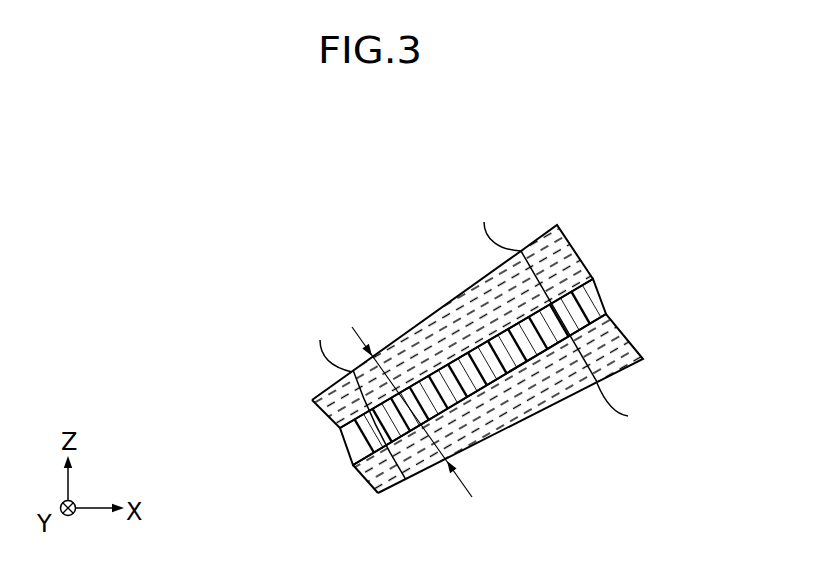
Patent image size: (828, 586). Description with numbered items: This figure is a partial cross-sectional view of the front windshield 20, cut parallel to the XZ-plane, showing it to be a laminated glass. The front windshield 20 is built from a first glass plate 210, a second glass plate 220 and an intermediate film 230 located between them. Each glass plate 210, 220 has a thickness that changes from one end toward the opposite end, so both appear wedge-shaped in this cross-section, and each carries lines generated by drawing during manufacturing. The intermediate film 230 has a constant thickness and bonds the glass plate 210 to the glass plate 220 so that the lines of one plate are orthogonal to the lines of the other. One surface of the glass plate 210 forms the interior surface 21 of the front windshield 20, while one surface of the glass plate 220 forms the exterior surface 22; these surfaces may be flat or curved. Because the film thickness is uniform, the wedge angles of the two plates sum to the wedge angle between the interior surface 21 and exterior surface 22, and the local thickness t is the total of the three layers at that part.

The front windshield 20 is at (500, 320).
The interior surface 21 is at (555, 404).
The exterior surface 22 is at (463, 293).
The glass plate 210 is at (627, 344).
The glass plate 220 is at (580, 250).
The intermediate film 230 is at (598, 295).